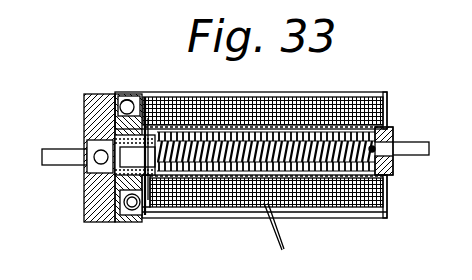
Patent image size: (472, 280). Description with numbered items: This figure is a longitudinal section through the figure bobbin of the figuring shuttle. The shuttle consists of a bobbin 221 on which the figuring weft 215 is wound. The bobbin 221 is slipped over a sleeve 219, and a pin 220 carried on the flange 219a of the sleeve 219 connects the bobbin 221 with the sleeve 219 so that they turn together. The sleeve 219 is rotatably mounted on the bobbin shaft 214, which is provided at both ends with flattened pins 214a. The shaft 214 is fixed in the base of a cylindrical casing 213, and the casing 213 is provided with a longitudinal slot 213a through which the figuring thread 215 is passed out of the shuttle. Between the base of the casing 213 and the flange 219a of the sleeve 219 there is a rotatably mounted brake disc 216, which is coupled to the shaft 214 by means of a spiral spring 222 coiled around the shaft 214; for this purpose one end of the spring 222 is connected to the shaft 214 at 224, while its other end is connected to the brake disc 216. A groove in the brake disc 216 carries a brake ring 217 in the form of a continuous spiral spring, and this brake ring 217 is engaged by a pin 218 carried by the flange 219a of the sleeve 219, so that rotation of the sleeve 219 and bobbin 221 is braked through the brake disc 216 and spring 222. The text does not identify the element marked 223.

The cylindrical casing 213 is at (283, 97).
The longitudinal slot 213a is at (346, 217).
The bobbin shaft 214 is at (137, 157).
The flattened pins 214a is at (423, 150).
The figuring weft 215 is at (288, 226).
The brake disc 216 is at (118, 182).
The brake ring 217 is at (130, 210).
The pin 218 is at (121, 102).
The sleeve 219 is at (393, 134).
The flange 219a is at (148, 200).
The pin 220 is at (152, 198).
The bobbin 221 is at (388, 194).
The spiral spring 222 is at (386, 118).
The left block 223 is at (123, 137).
The spring connection point 224 is at (382, 151).